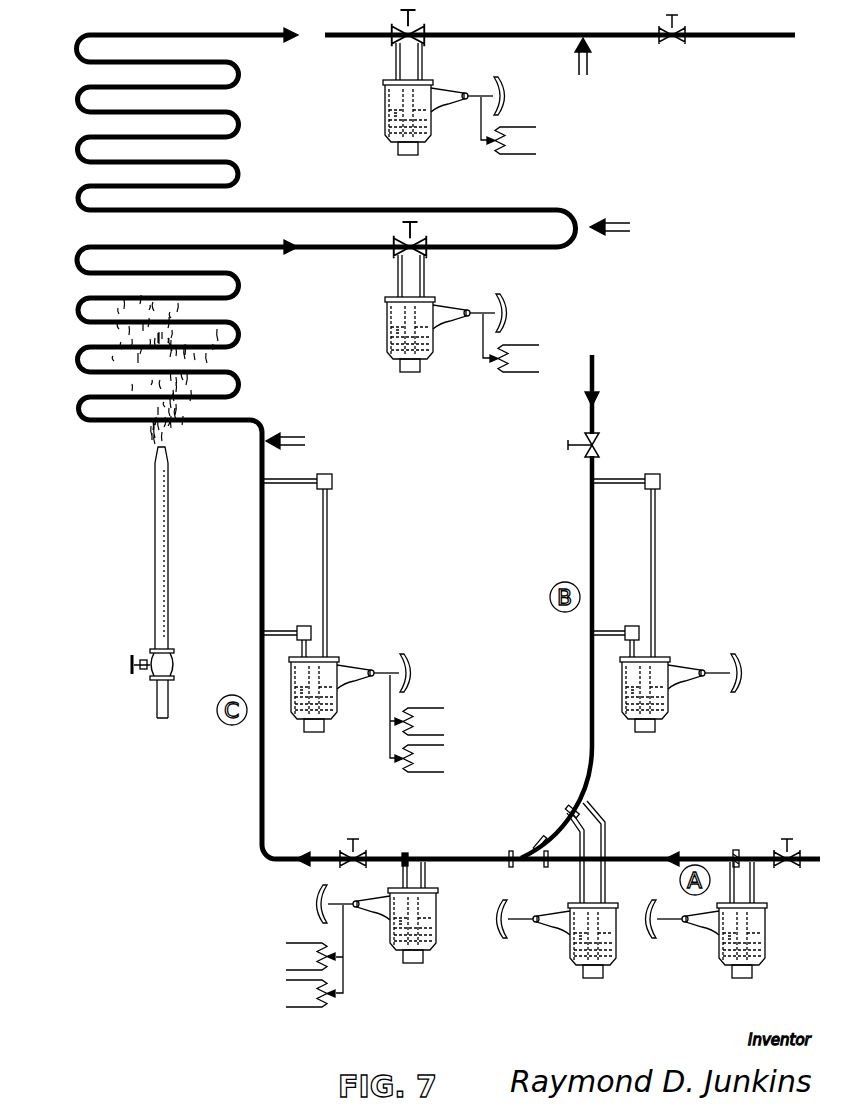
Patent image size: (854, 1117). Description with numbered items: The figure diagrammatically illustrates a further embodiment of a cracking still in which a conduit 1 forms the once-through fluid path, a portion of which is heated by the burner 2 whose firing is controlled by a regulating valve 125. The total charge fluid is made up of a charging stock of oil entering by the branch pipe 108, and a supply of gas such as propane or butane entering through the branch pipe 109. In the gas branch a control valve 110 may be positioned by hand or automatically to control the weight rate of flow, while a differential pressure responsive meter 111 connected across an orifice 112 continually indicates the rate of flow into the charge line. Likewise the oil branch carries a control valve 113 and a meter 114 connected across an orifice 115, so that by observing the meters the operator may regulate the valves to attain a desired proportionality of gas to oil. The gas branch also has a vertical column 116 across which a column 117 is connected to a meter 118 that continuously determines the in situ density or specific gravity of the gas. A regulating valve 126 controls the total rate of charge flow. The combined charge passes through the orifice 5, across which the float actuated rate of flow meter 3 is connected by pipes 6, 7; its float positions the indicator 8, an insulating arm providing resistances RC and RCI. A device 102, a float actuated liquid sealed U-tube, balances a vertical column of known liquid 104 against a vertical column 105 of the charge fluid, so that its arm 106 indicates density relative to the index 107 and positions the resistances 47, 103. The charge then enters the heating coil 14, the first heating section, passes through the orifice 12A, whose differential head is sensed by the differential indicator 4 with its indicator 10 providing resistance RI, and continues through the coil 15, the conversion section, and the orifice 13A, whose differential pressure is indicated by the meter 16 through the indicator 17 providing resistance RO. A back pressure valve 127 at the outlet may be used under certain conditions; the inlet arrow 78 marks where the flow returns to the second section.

The conduit 1 is at (537, 35).
The burner 2 is at (155, 550).
The rate of flow meter 3 is at (394, 932).
The differential indicator 4 is at (388, 320).
The orifice 5 is at (407, 851).
The pipe 6 is at (426, 883).
The pipe 7 is at (402, 883).
The indicator 8 is at (343, 898).
The indicator 10 is at (491, 312).
The orifice 12A is at (401, 242).
The orifice 13A is at (398, 29).
The heating coil 14 is at (67, 346).
The coil 15 is at (67, 138).
The meter 16 is at (387, 115).
The indicator 17 is at (486, 98).
The resistance 47 is at (434, 723).
The inlet 78 is at (590, 237).
The device 102 is at (338, 703).
The resistance 103 is at (439, 761).
The column of known liquid 104 is at (328, 582).
The vertical column 105 is at (262, 577).
The arm 106 is at (392, 670).
The index 107 is at (410, 655).
The branch pipe 108 is at (625, 857).
The branch pipe 109 is at (592, 386).
The control valve 110 is at (595, 441).
The differential pressure responsive meter 111 is at (572, 941).
The orifice 112 is at (572, 806).
The control valve 113 is at (789, 839).
The meter 114 is at (722, 941).
The orifice 115 is at (737, 848).
The vertical column 116 is at (590, 537).
The column 117 is at (658, 545).
The meter 118 is at (668, 700).
The regulating valve 125 is at (150, 678).
The regulating valve 126 is at (352, 839).
The back pressure valve 127 is at (673, 43).